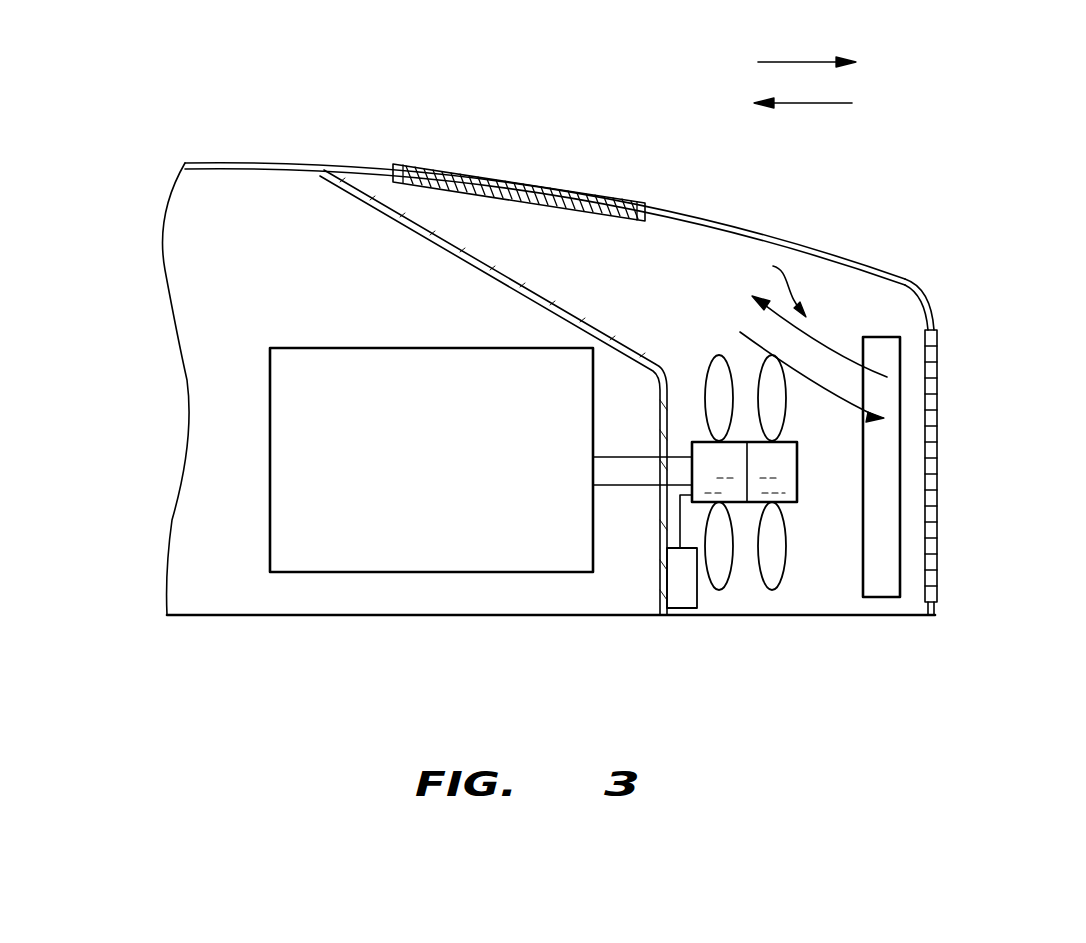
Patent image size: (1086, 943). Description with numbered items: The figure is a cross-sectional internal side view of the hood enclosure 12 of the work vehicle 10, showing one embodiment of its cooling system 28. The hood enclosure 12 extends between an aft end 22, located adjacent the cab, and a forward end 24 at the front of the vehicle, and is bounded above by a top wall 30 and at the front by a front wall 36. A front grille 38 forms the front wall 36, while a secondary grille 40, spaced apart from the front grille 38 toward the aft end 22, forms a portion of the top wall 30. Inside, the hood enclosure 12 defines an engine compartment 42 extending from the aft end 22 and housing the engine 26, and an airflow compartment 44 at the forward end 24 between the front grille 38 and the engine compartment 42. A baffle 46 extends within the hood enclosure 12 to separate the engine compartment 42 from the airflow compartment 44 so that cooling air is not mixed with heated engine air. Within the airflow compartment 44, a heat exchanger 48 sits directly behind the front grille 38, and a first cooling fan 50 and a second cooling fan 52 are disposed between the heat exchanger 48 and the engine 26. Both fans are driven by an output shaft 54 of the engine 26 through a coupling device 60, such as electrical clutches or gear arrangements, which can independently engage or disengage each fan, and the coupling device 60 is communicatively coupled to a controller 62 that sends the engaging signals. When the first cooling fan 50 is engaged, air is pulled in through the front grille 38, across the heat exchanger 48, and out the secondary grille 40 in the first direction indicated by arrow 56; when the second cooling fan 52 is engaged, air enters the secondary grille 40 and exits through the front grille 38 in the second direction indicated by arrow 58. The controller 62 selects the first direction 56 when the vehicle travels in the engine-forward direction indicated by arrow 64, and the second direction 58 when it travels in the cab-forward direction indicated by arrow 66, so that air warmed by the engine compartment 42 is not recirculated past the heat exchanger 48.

The work vehicle 10 is at (989, 164).
The hood enclosure 12 is at (559, 402).
The aft end 22 is at (184, 162).
The forward end 24 is at (917, 287).
The engine 26 is at (419, 464).
The cooling system 28 is at (769, 284).
The top wall 30 is at (722, 220).
The front wall 36 is at (938, 607).
The front grille 38 is at (928, 473).
The secondary grille 40 is at (540, 180).
The engine compartment 42 is at (278, 266).
The airflow compartment 44 is at (573, 282).
The baffle 46 is at (452, 256).
The heat exchanger 48 is at (887, 392).
The first cooling fan 50 is at (777, 562).
The second cooling fan 52 is at (718, 567).
The output shaft 54 is at (640, 472).
The first direction arrow 56 is at (823, 350).
The second direction arrow 58 is at (820, 402).
The coupling device 60 is at (783, 485).
The controller 62 is at (680, 592).
The engine-forward direction arrow 64 is at (782, 60).
The cab-forward direction arrow 66 is at (828, 103).